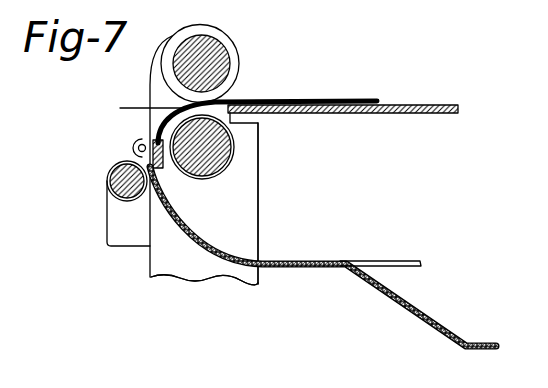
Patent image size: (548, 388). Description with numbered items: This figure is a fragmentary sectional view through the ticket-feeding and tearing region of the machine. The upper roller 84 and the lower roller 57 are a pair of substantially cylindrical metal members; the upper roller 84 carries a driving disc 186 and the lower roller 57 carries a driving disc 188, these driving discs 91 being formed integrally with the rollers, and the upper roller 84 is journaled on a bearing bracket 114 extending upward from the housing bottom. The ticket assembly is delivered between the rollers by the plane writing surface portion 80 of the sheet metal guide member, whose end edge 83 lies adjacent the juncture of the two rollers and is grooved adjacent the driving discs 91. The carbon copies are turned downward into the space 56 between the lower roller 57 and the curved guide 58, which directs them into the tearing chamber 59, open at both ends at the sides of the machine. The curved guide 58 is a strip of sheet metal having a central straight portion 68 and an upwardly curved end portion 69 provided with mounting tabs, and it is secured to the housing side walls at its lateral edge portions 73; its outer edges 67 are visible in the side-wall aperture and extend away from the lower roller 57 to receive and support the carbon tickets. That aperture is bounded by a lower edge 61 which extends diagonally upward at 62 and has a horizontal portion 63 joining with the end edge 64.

The driving disc 186 is at (213, 33).
The upper roller 84 is at (222, 60).
The plane writing surface portion 80 is at (448, 100).
The tearing chamber 59 is at (437, 152).
The end edge of guide member 83 is at (258, 114).
The lower roller 57 is at (230, 148).
The driving discs 91 is at (259, 171).
The driving disc 188 is at (228, 165).
The end edge 64 is at (259, 223).
The space 56 is at (165, 170).
The upwardly curved end portion 69 is at (172, 214).
The curved guide 58 is at (193, 237).
The bearing bracket 114 is at (153, 270).
The horizontal portion 63 is at (312, 261).
The central straight portion 68 is at (389, 260).
The outer edges of guide 67 is at (402, 267).
The lateral edge portions 73 is at (277, 267).
The diagonal portion of lower edge 62 is at (414, 306).
The lower edge 61 is at (474, 343).